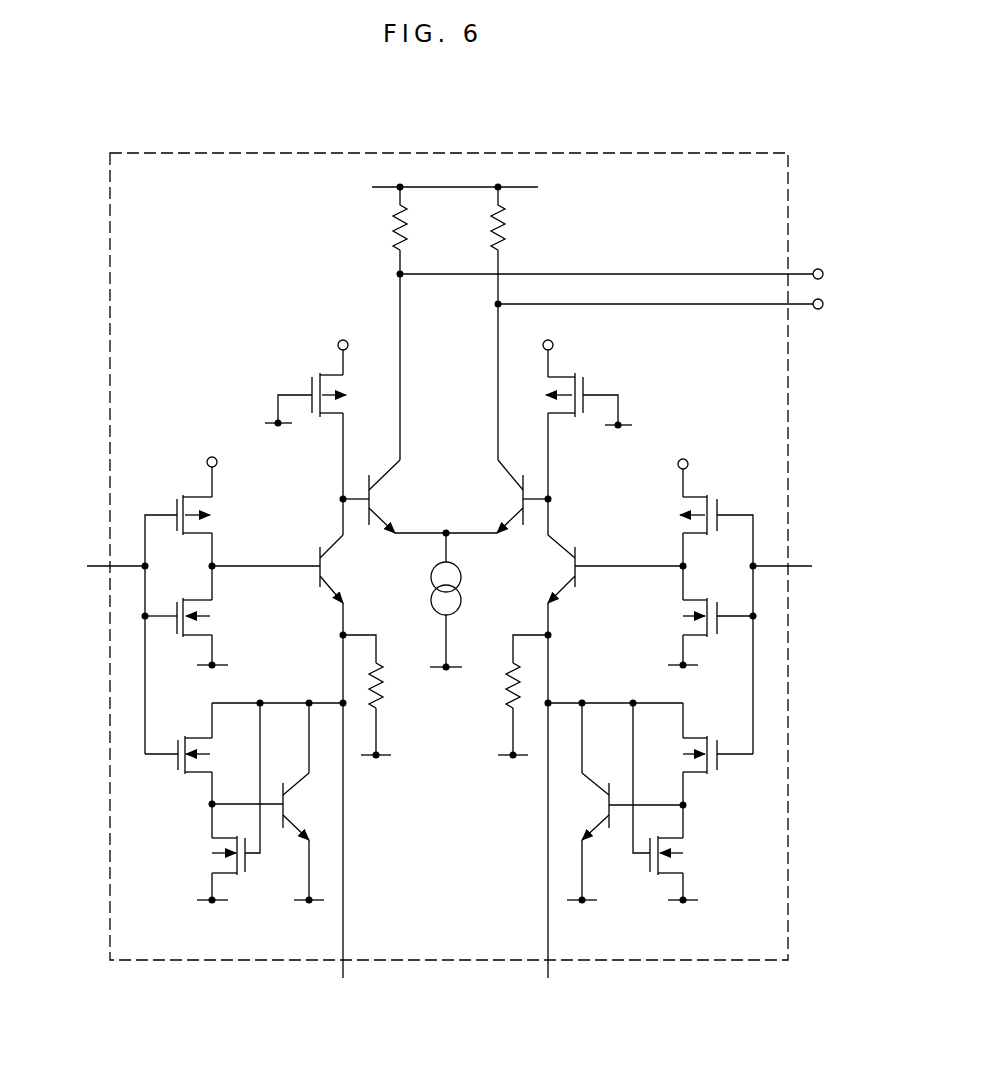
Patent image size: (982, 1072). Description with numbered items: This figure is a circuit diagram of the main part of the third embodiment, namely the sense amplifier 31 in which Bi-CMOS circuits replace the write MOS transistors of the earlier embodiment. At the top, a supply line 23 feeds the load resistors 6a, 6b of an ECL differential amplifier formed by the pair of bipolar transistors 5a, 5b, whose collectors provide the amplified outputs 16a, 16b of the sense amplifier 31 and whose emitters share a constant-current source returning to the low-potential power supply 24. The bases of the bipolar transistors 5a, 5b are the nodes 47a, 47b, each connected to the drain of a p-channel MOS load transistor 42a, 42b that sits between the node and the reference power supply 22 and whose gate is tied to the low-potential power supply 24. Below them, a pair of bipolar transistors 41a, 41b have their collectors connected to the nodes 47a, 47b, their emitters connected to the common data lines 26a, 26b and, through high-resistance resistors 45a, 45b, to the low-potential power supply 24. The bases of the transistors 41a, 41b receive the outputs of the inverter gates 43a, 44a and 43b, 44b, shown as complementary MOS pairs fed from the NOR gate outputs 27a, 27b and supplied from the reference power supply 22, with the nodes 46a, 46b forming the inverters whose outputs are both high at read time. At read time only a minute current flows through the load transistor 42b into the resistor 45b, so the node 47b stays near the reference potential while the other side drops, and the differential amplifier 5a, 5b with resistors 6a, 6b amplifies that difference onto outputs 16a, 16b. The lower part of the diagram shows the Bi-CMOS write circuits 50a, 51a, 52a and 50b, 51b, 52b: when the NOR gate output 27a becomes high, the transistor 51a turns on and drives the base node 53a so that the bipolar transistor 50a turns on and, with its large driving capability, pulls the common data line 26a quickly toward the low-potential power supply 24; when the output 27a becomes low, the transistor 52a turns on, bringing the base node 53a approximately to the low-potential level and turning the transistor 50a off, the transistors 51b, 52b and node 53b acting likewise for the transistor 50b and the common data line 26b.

The sense amplifier 31 is at (789, 246).
The supply line 23 is at (455, 173).
The load resistor 6a is at (422, 323).
The load resistor 6b is at (520, 323).
The output 16a is at (637, 275).
The output 16b is at (686, 305).
The VRS power supply 22 is at (435, 399).
The VEE power supply 24 is at (444, 674).
The p-channel MOS transistor 42a is at (312, 378).
The p-channel MOS transistor 42b is at (584, 382).
The node 47a is at (343, 482).
The node 47b is at (548, 482).
The bipolar transistor 5a is at (394, 496).
The bipolar transistor 5b is at (497, 496).
The bipolar transistor 41a is at (346, 585).
The bipolar transistor 41b is at (541, 585).
The resistor 45a is at (380, 661).
The resistor 45b is at (510, 661).
The output from the NOR gate 27a is at (85, 566).
The output from the NOR gate 27b is at (808, 566).
The inverter gate 43a is at (212, 524).
The inverter gate 43b is at (683, 530).
The inverter gate 44a is at (206, 627).
The inverter gate 44b is at (692, 632).
The inverter 46a is at (232, 568).
The inverter 46b is at (662, 572).
The transistor 51a is at (246, 751).
The transistor 51b is at (649, 751).
The transistor 52a is at (202, 801).
The transistor 52b is at (687, 801).
The node 53a is at (207, 800).
The node 53b is at (675, 805).
The bipolar transistor 50a is at (297, 800).
The bipolar transistor 50b is at (597, 805).
The common data line 26a is at (351, 824).
The common data line 26b is at (562, 824).